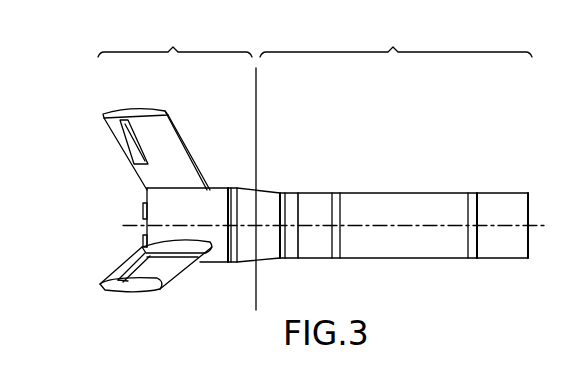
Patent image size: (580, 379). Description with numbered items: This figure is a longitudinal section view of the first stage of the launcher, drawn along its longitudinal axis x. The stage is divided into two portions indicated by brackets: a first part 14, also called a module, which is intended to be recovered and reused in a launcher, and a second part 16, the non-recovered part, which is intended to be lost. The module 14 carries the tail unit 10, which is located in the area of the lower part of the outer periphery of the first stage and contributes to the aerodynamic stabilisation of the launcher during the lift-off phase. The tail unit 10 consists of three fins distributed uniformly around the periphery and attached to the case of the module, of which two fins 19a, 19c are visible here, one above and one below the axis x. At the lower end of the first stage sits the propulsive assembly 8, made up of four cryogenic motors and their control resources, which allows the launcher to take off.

The tail unit 10 is at (103, 163).
The propulsive assembly 8 is at (133, 210).
The longitudinal axis x is at (130, 227).
The first part (module) 14 is at (175, 40).
The second part (non-recovered part) 16 is at (396, 40).
The fin 19a is at (162, 140).
The fin 19c is at (166, 269).